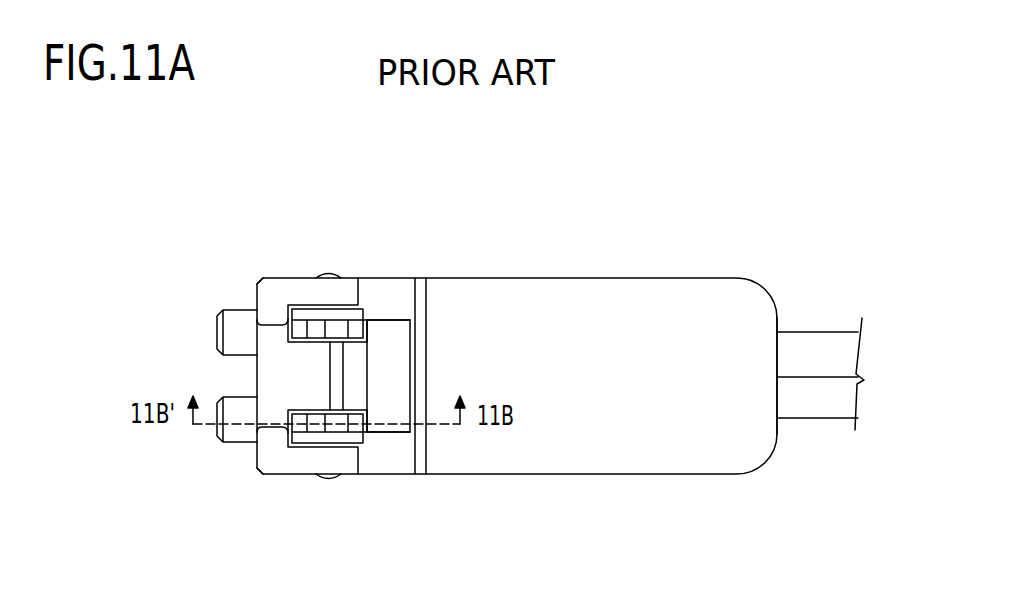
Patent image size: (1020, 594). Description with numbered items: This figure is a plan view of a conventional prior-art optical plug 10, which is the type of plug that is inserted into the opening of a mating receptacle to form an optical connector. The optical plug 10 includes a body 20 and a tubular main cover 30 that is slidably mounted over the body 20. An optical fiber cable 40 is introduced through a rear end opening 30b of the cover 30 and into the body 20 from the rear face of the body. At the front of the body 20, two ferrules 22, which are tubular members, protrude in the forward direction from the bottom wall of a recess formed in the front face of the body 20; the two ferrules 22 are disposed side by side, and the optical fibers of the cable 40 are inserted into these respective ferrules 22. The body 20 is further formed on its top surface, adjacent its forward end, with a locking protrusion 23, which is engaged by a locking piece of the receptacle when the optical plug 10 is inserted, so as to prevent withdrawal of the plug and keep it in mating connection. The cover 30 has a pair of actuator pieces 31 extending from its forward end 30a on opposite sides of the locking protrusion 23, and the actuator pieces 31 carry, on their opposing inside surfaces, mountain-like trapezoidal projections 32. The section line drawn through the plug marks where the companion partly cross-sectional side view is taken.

The optical plug 10 is at (622, 238).
The body 20 is at (284, 278).
The ferrules 22 is at (217, 408).
The locking protrusion 23 is at (365, 397).
The main cover 30 is at (545, 278).
The forward end 30a is at (356, 458).
The rear end opening 30b is at (778, 332).
The actuator pieces 31 is at (341, 445).
The projections 32 is at (325, 332).
The optical fiber cable 40 is at (815, 420).